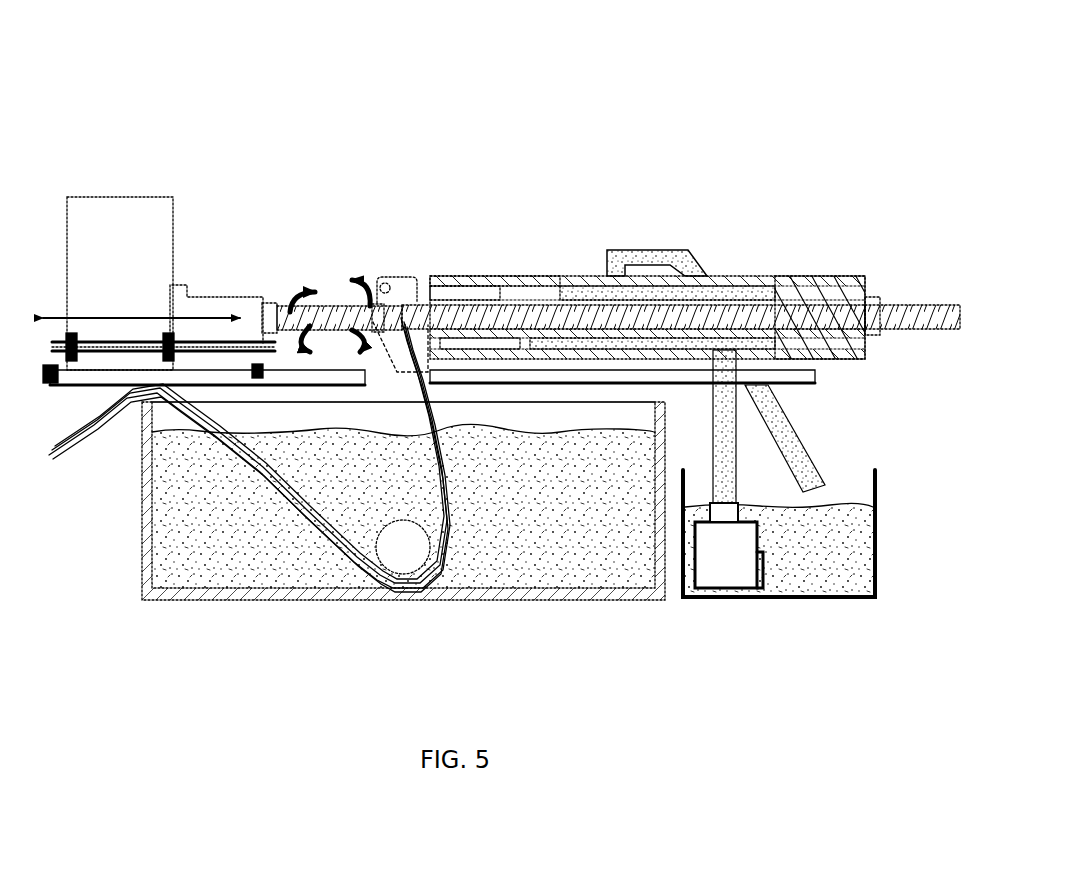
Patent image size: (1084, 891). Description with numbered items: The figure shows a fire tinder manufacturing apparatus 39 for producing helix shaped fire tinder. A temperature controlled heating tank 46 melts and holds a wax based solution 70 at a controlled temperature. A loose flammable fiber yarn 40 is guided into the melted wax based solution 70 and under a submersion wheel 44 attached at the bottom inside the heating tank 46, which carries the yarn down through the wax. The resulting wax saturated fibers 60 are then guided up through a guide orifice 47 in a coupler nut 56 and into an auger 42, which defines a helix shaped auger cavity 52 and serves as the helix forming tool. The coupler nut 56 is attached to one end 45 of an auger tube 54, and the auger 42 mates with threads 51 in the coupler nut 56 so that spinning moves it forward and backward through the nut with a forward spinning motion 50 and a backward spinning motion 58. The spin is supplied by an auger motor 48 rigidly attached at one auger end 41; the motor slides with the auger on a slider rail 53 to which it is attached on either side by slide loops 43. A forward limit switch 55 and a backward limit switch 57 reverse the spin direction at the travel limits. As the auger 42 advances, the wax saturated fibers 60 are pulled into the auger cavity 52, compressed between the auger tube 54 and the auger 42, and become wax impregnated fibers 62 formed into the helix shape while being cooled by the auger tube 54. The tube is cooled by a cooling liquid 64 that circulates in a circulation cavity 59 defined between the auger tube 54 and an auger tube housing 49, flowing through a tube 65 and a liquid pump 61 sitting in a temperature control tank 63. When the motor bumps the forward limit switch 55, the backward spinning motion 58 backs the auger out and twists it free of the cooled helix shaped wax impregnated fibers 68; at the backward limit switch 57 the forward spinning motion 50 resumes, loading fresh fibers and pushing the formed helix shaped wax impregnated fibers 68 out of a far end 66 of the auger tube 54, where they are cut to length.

The fire tinder manufacturing apparatus 39 is at (536, 100).
The loose flammable fiber yarn 40 is at (70, 455).
The auger end 41 is at (272, 308).
The auger 42 is at (297, 288).
The slide loops 43 is at (166, 338).
The submersion wheel 44 is at (405, 558).
The end of auger tube 45 is at (442, 298).
The temperature controlled heating tank 46 is at (218, 592).
The guide orifice 47 is at (423, 370).
The auger motor 48 is at (132, 212).
The auger tube housing 49 is at (768, 278).
The forward spinning motion 50 is at (314, 285).
The threads 51 is at (380, 322).
The helix shaped auger cavity 52 is at (328, 306).
The slider rail 53 is at (198, 347).
The auger tube 54 is at (505, 298).
The forward limit switch 55 is at (258, 366).
The coupler nut 56 is at (398, 298).
The backward limit switch 57 is at (50, 363).
The backward spinning motion 58 is at (355, 278).
The circulation cavity 59 is at (725, 293).
The wax saturated fibers 60 is at (370, 410).
The liquid pump 61 is at (725, 565).
The wax impregnated fibers 62 is at (582, 317).
The temperature control tank 63 is at (803, 600).
The cooling liquid 64 is at (820, 542).
The tube 65 is at (657, 260).
The far end of auger tube 66 is at (860, 337).
The cooled helix shaped wax impregnated fibers 68 is at (927, 314).
The wax based solution 70 is at (403, 506).